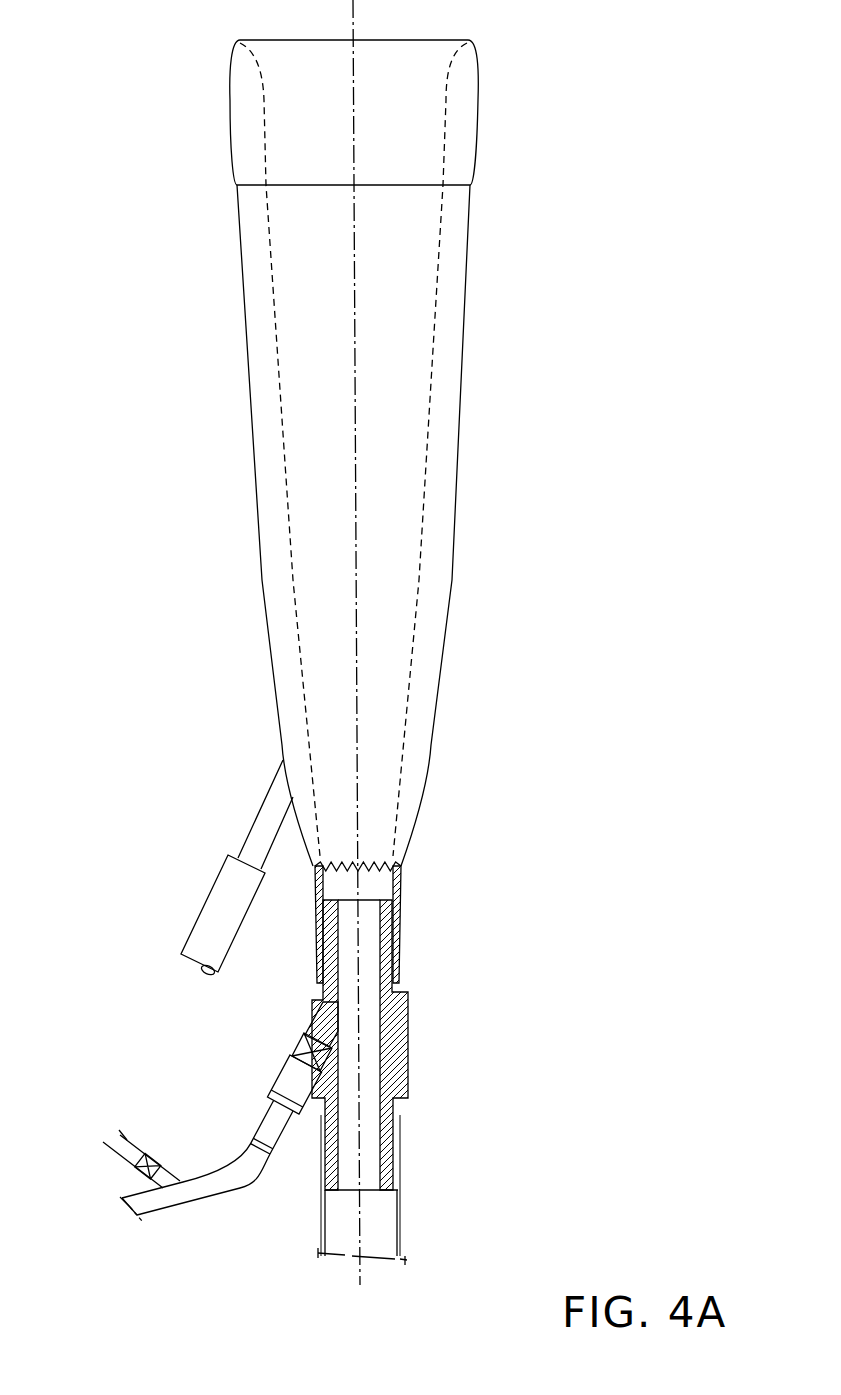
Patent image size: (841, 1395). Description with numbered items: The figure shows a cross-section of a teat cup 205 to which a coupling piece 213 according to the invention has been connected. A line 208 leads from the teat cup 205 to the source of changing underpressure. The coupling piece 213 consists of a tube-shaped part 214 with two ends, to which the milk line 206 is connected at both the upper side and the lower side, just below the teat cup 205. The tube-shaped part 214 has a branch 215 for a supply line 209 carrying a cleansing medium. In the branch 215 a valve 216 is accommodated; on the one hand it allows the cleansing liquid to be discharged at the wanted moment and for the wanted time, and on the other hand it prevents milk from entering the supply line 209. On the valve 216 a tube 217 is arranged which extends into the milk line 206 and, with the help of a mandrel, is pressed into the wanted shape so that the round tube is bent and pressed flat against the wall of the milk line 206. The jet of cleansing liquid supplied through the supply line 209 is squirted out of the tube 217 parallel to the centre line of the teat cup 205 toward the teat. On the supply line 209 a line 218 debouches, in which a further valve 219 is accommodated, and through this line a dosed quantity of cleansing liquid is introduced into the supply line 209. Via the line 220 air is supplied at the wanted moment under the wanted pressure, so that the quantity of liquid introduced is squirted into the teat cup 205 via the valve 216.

The teat cup 205 is at (453, 327).
The milk line 206 is at (400, 1208).
The line to the source of changing underpressure 208 is at (208, 908).
The supply line 209 is at (240, 1170).
The coupling piece 213 is at (490, 1021).
The tube-shaped part 214 is at (402, 1073).
The branch 215 is at (277, 1077).
The valve 216 is at (303, 1047).
The tube 217 is at (313, 1006).
The line 218 is at (128, 1137).
The valve 219 is at (153, 1153).
The line 220 is at (143, 1197).